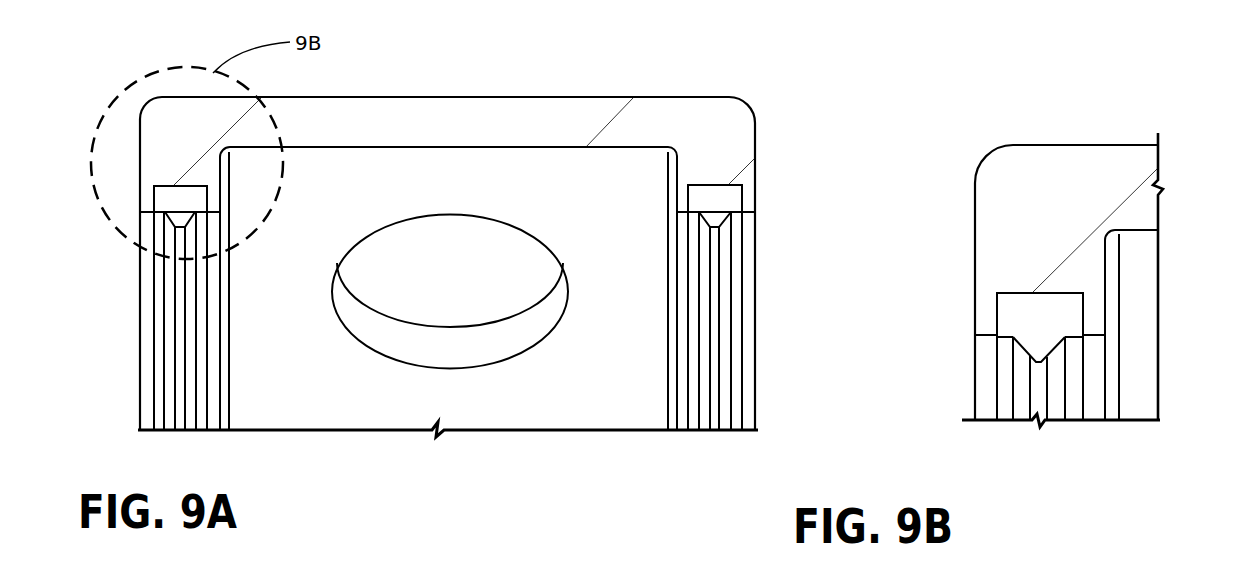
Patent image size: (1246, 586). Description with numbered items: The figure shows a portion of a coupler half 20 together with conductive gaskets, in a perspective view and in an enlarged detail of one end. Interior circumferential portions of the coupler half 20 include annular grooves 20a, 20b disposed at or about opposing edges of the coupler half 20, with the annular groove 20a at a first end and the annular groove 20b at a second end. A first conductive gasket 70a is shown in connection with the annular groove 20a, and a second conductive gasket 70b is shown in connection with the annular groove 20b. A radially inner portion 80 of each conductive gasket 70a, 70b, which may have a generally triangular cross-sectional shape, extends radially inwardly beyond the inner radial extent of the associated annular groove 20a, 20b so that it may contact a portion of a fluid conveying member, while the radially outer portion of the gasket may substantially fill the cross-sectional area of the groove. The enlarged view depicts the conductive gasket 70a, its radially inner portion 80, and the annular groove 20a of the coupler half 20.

In FIG. 9A, the first coupler half 20 is at (505, 113).
In FIG. 9B, the first coupler half 20 is at (1081, 194).
In FIG. 9A, the annular groove 20a is at (168, 186).
In FIG. 9B, the annular groove 20a is at (1083, 308).
In FIG. 9A, the annular groove 20b is at (712, 185).
In FIG. 9A, the first conductive gasket 70a is at (177, 200).
In FIG. 9B, the first conductive gasket 70a is at (1037, 318).
In FIG. 9A, the second conductive gasket 70b is at (715, 200).
In FIG. 9B, the radially inner portion 80 is at (1035, 350).